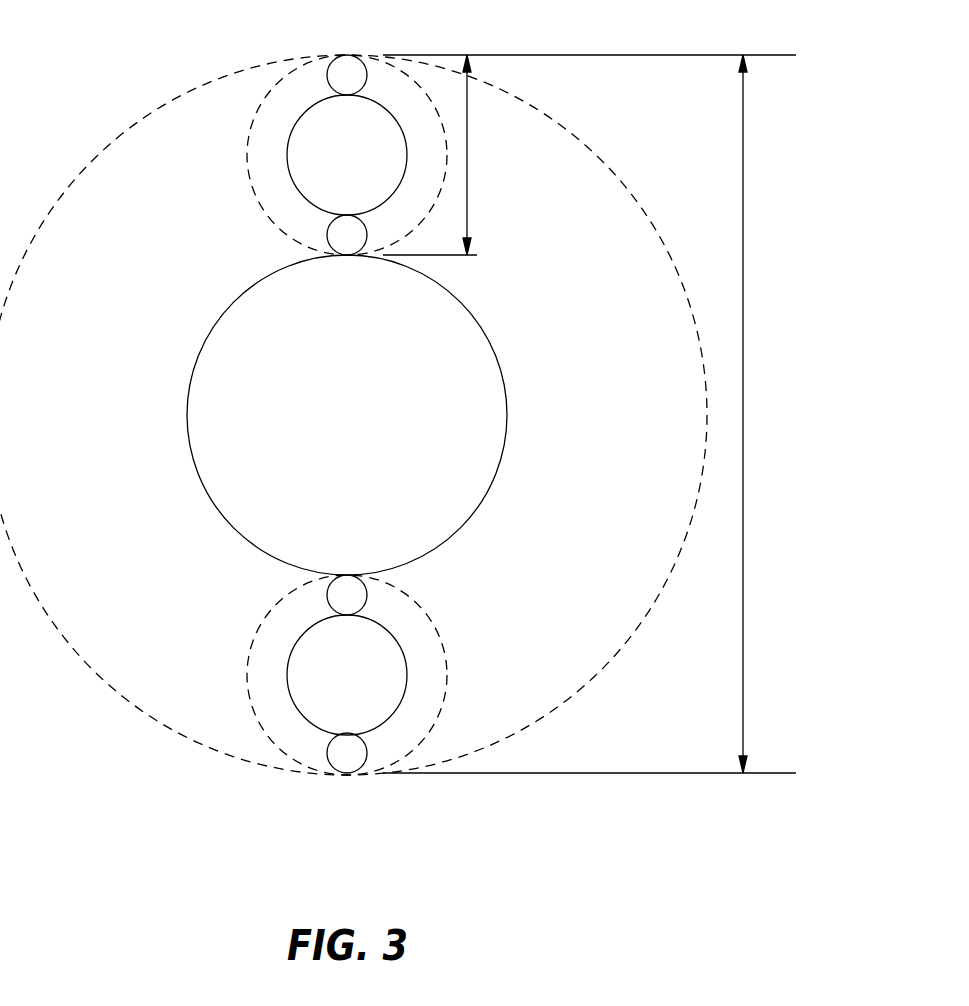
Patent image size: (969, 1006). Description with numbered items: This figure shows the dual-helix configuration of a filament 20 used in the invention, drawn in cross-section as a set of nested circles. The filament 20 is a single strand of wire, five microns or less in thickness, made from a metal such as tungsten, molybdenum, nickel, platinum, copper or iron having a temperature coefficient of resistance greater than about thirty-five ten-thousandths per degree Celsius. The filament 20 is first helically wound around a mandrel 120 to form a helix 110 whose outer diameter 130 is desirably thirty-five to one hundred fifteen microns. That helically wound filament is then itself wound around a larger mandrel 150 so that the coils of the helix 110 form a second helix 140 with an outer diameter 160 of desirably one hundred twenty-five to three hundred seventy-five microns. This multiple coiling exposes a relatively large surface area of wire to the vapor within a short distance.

The filament 20 is at (347, 63).
The helix 110 is at (263, 192).
The mandrel 120 is at (297, 156).
The outer diameter 130 is at (467, 197).
The second helix 140 is at (150, 703).
The larger mandrel 150 is at (260, 540).
The outer diameter 160 is at (743, 125).